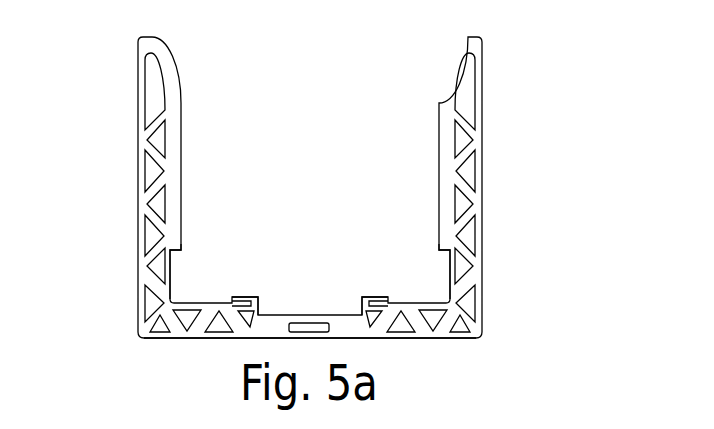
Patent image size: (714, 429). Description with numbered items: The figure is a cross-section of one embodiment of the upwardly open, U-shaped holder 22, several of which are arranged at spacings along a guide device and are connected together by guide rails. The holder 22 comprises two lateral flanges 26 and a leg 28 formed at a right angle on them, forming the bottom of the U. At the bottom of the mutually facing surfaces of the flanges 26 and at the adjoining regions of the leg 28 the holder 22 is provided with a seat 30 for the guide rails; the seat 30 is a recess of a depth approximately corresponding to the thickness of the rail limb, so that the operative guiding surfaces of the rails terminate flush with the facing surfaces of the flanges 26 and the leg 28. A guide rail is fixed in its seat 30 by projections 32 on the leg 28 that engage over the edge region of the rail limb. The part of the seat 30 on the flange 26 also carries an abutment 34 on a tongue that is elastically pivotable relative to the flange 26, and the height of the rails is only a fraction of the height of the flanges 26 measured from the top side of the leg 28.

The U-shaped holder 22 is at (300, 222).
The lateral flange 26 is at (138, 128).
The leg 28 is at (422, 338).
The seat 30 is at (447, 298).
The projection 32 is at (244, 297).
The abutment 34 is at (450, 266).